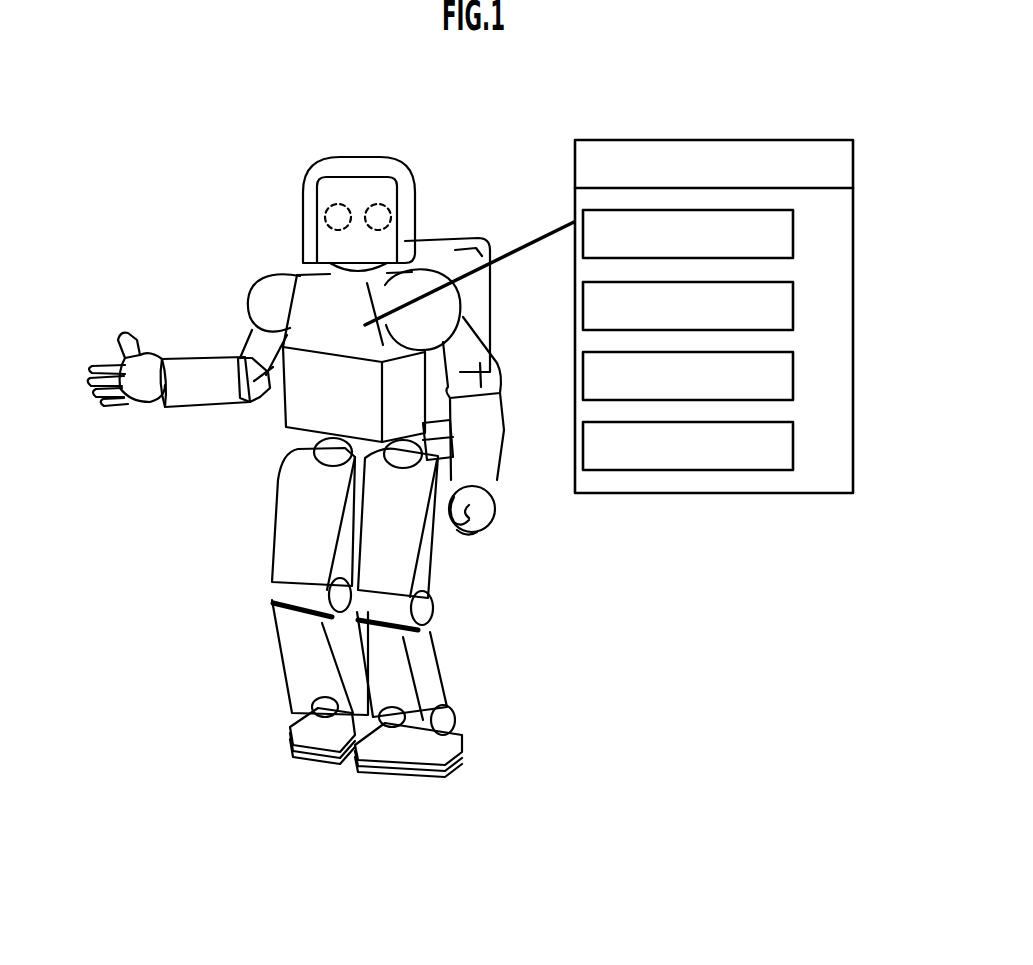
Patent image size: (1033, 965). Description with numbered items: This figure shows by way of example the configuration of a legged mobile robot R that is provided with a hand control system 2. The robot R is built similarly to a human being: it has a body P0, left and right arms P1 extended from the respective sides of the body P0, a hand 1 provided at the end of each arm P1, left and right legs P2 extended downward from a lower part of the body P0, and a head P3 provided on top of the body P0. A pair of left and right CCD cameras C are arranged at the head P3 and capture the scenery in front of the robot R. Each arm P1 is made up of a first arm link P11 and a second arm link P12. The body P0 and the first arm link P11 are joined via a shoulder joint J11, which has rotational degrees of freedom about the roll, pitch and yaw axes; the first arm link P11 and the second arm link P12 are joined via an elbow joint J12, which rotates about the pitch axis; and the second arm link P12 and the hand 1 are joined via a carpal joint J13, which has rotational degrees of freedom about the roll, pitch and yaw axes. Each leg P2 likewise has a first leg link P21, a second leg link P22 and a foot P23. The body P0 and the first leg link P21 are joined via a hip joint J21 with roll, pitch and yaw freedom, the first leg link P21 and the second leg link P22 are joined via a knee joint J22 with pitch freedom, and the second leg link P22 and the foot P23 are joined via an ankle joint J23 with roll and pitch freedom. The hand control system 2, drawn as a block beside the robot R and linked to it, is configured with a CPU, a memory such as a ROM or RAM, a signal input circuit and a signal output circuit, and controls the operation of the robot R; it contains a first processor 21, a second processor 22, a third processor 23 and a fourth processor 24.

The hand 1 is at (90, 348).
The hand control system 2 is at (770, 140).
The first processor 21 is at (794, 232).
The second processor 22 is at (794, 303).
The third processor 23 is at (794, 378).
The fourth processor 24 is at (794, 446).
The robot R is at (498, 143).
The CCD cameras C is at (331, 200).
The body P0 is at (348, 406).
The arm P1 is at (150, 240).
The leg P2 is at (530, 628).
The head P3 is at (405, 148).
The first arm link P11 is at (277, 393).
The second arm link P12 is at (197, 393).
The first leg link P21 is at (433, 538).
The second leg link P22 is at (430, 668).
The foot P23 is at (422, 760).
The shoulder joint J11 is at (265, 268).
The elbow joint J12 is at (235, 350).
The carpal joint J13 is at (160, 348).
The hip joint J21 is at (440, 447).
The knee joint J22 is at (438, 612).
The ankle joint J23 is at (460, 707).